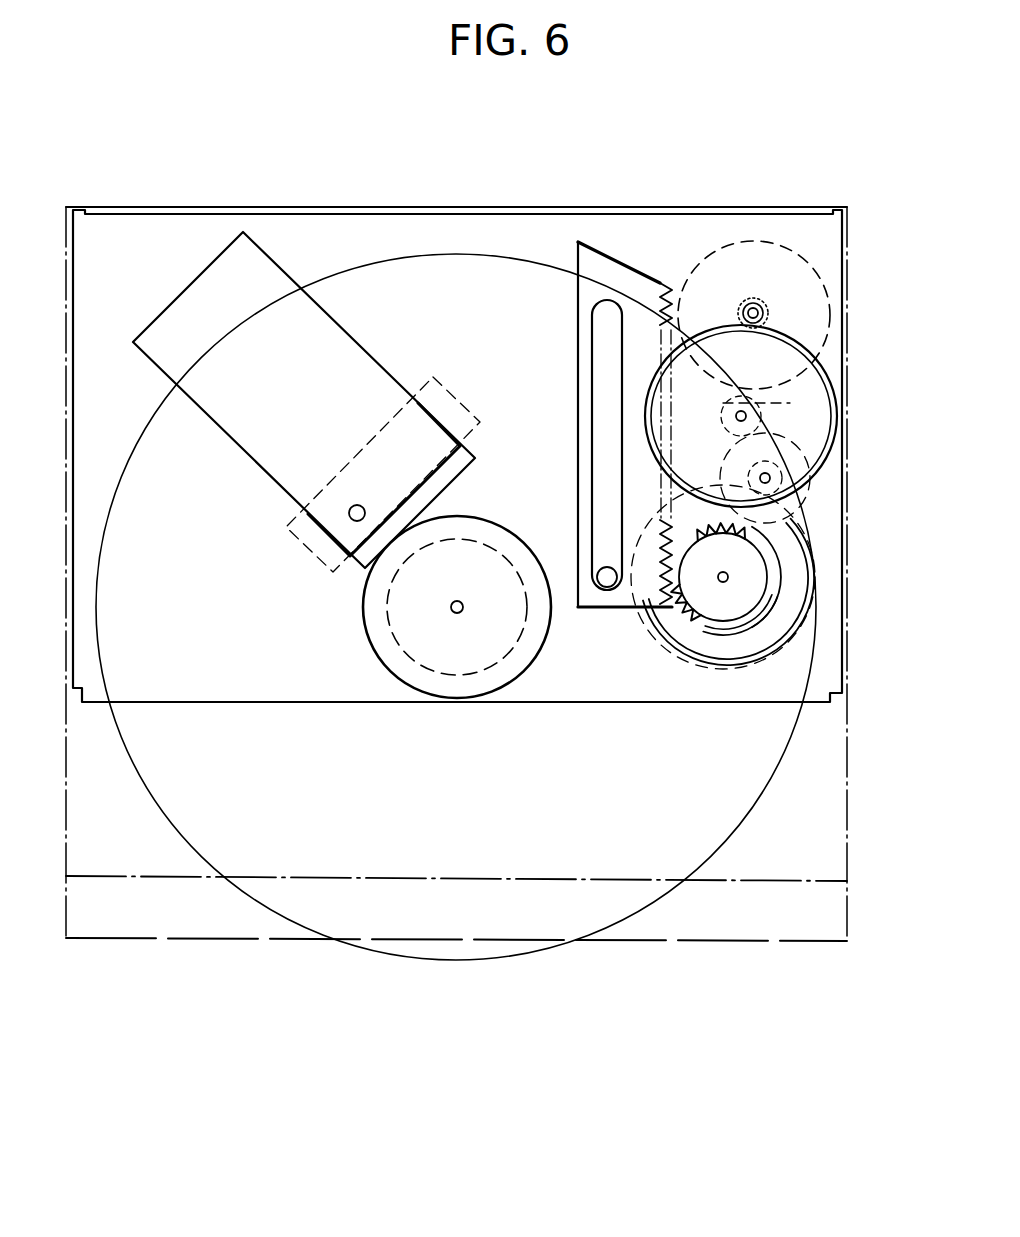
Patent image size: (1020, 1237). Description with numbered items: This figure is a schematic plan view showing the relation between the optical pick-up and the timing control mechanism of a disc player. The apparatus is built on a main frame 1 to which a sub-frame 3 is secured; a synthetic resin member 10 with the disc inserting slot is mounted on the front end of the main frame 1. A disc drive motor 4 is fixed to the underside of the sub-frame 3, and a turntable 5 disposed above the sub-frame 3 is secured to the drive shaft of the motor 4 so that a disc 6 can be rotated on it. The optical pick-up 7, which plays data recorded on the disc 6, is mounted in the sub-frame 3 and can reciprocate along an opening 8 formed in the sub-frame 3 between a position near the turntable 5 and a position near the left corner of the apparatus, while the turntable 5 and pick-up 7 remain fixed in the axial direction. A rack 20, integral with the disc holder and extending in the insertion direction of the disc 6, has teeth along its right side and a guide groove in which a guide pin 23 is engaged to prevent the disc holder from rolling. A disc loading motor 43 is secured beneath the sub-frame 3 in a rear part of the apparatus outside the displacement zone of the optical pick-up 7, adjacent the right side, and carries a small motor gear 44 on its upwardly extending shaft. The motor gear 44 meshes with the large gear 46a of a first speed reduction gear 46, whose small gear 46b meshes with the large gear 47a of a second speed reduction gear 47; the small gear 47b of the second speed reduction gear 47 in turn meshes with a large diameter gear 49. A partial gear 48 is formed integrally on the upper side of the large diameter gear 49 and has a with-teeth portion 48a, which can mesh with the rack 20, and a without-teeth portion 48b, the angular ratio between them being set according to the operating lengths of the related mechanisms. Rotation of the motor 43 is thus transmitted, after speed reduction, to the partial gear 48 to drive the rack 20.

The main frame 1 is at (345, 208).
The sub-frame 3 is at (470, 213).
The disc drive motor 4 is at (412, 662).
The turntable 5 is at (365, 626).
The disc 6 is at (560, 948).
The optical pick-up 7 is at (388, 442).
The opening 8 is at (255, 258).
The synthetic resin member 10 is at (663, 942).
The rack 20 is at (568, 331).
The guide pin 23 is at (603, 600).
The disc loading motor 43 is at (715, 243).
The motor gear 44 is at (753, 300).
The first speed reduction gear 46 is at (810, 344).
The large gear 46a is at (831, 370).
The small gear 46b is at (790, 403).
The second speed reduction gear 47 is at (810, 503).
The large gear 47a is at (808, 495).
The small gear 47b is at (830, 447).
The partial gear 48 is at (790, 600).
The with-teeth portion 48a is at (792, 578).
The without-teeth portion 48b is at (792, 557).
The large diameter gear 49 is at (810, 624).